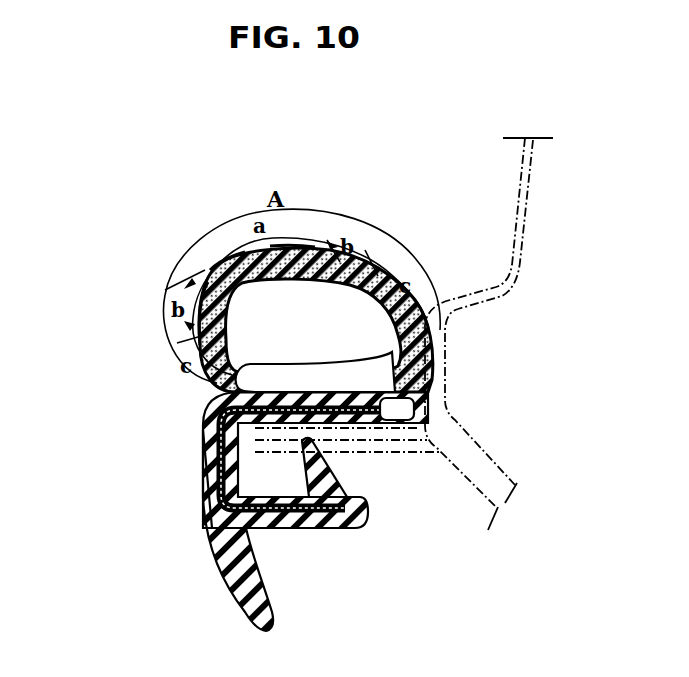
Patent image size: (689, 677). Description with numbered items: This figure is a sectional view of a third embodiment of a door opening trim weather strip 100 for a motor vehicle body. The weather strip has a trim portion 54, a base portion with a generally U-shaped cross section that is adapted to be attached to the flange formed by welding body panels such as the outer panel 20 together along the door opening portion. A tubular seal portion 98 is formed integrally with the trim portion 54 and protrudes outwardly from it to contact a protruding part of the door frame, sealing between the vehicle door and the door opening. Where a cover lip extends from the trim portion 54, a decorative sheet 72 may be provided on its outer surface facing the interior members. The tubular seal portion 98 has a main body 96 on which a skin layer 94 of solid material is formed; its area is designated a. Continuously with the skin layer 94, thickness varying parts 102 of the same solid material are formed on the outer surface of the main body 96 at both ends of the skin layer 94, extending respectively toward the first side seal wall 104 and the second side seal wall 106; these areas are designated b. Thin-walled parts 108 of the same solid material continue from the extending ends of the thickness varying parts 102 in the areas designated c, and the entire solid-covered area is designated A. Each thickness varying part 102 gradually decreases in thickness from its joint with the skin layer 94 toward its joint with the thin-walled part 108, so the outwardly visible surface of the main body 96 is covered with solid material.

The outer panel 20 is at (444, 334).
The trim portion 54 is at (335, 547).
The decorative sheet 72 is at (193, 545).
The skin layer 94 is at (196, 199).
The main body 96 is at (303, 185).
The tubular seal portion 98 is at (161, 265).
The door opening trim weather strip 100 is at (316, 255).
The thickness varying parts 102 is at (240, 268).
The first side seal wall 104 is at (366, 460).
The second side seal wall 106 is at (384, 444).
The thin-walled parts 108 is at (293, 335).